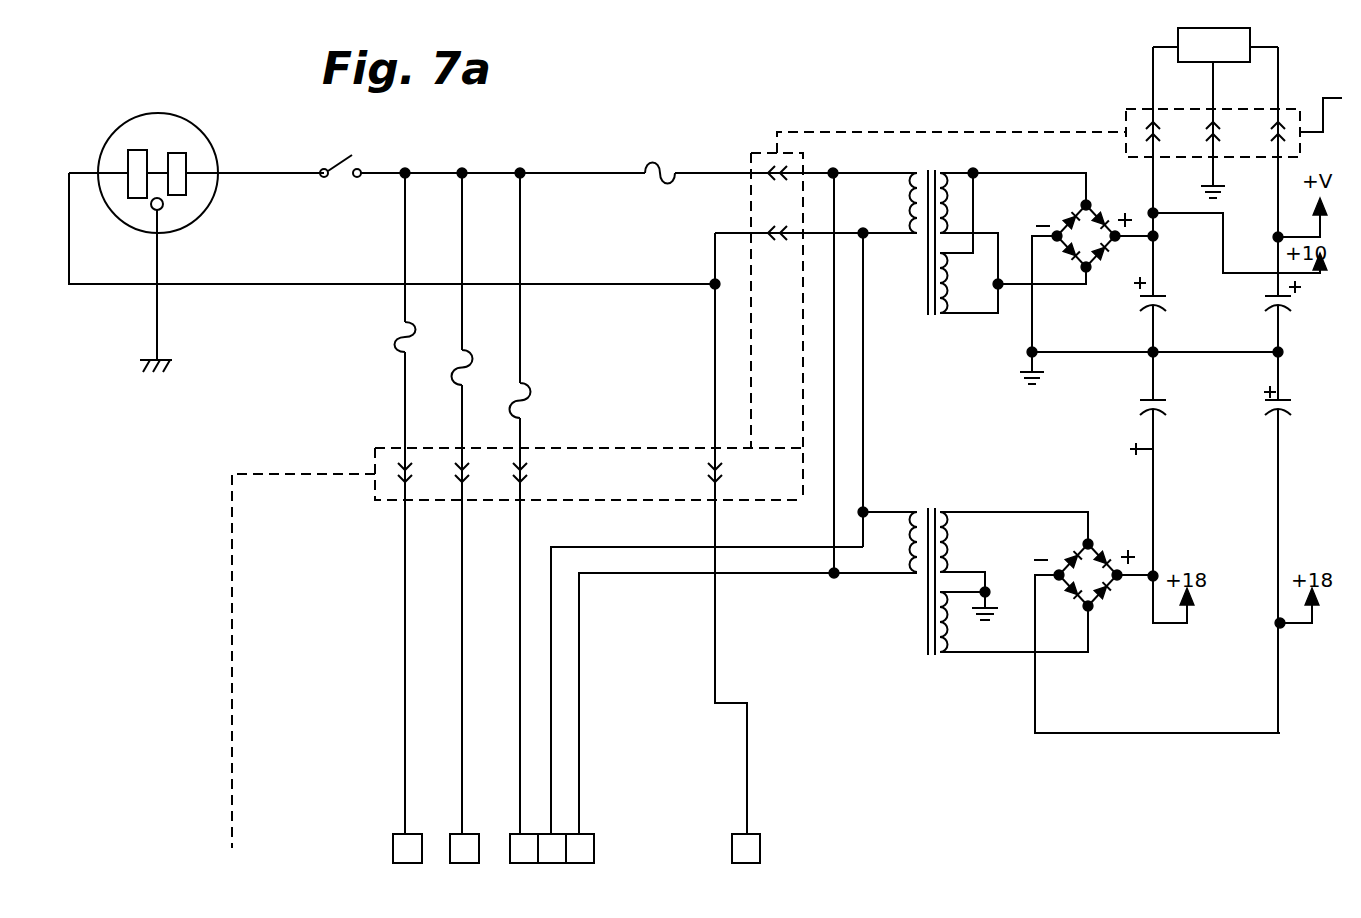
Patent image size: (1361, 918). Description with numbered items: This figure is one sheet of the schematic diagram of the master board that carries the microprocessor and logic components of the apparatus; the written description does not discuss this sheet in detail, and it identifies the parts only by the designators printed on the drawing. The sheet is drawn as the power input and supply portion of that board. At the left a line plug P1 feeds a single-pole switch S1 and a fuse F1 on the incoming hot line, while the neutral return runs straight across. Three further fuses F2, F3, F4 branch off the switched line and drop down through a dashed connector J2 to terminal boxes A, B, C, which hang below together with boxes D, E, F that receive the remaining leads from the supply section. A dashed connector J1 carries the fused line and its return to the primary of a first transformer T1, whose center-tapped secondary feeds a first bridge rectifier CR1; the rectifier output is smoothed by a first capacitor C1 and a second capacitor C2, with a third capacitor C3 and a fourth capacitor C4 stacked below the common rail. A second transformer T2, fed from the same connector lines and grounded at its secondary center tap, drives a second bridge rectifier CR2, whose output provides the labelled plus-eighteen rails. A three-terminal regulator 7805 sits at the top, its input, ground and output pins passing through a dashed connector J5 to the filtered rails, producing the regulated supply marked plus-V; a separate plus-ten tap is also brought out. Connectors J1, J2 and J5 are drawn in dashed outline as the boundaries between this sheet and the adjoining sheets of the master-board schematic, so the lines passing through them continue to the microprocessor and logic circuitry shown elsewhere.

The AC power plug P1 is at (392, 242).
The power switch S1 is at (340, 158).
The fuse F1 is at (660, 164).
The fuse F2 is at (391, 503).
The fuse F3 is at (448, 503).
The fuse F4 is at (507, 503).
The connector J1 is at (938, 313).
The output connector J2 is at (517, 648).
The connector J5 is at (1217, 136).
The transformer T1 is at (998, 230).
The transformer T2 is at (958, 569).
The bridge rectifier CR1 is at (1086, 282).
The bridge rectifier CR2 is at (1155, 627).
The filter capacitor C1 is at (1164, 296).
The filter capacitor C2 is at (1294, 298).
The filter capacitor C3 is at (1162, 425).
The filter capacitor C4 is at (1292, 403).
The voltage regulator 7805 is at (1215, 110).
The terminal A is at (407, 848).
The terminal B is at (464, 848).
The terminal C is at (524, 848).
The terminal D is at (552, 848).
The terminal E is at (580, 848).
The terminal F is at (746, 848).